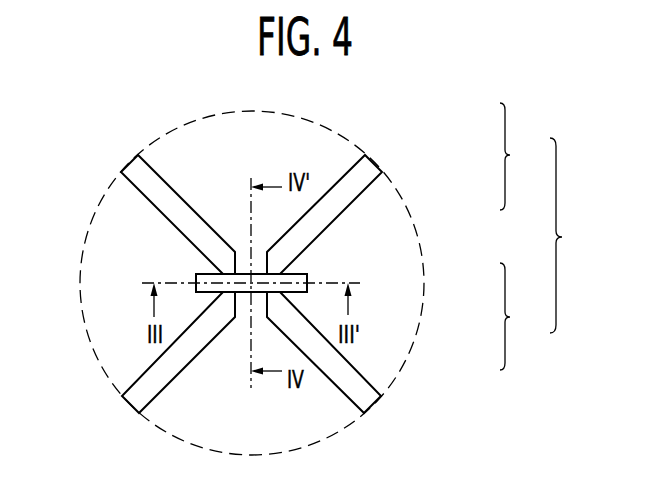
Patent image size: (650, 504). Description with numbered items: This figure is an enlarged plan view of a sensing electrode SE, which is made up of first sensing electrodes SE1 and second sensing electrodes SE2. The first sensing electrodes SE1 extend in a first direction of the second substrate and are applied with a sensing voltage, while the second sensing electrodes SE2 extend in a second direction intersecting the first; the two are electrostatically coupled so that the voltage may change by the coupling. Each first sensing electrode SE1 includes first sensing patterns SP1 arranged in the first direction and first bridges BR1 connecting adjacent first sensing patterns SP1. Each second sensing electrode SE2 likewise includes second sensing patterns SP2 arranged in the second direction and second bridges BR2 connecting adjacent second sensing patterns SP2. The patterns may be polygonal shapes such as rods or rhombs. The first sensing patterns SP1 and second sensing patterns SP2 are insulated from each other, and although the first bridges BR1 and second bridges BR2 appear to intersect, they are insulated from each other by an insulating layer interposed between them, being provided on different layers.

The second sensing pattern SP2 is at (335, 148).
The second bridge BR2 is at (257, 263).
The second sensing electrode SE2 is at (524, 156).
The first sensing pattern SP1 is at (408, 273).
The first bridge BR1 is at (257, 287).
The first sensing electrode SE1 is at (523, 316).
The sensing electrode SE is at (568, 235).